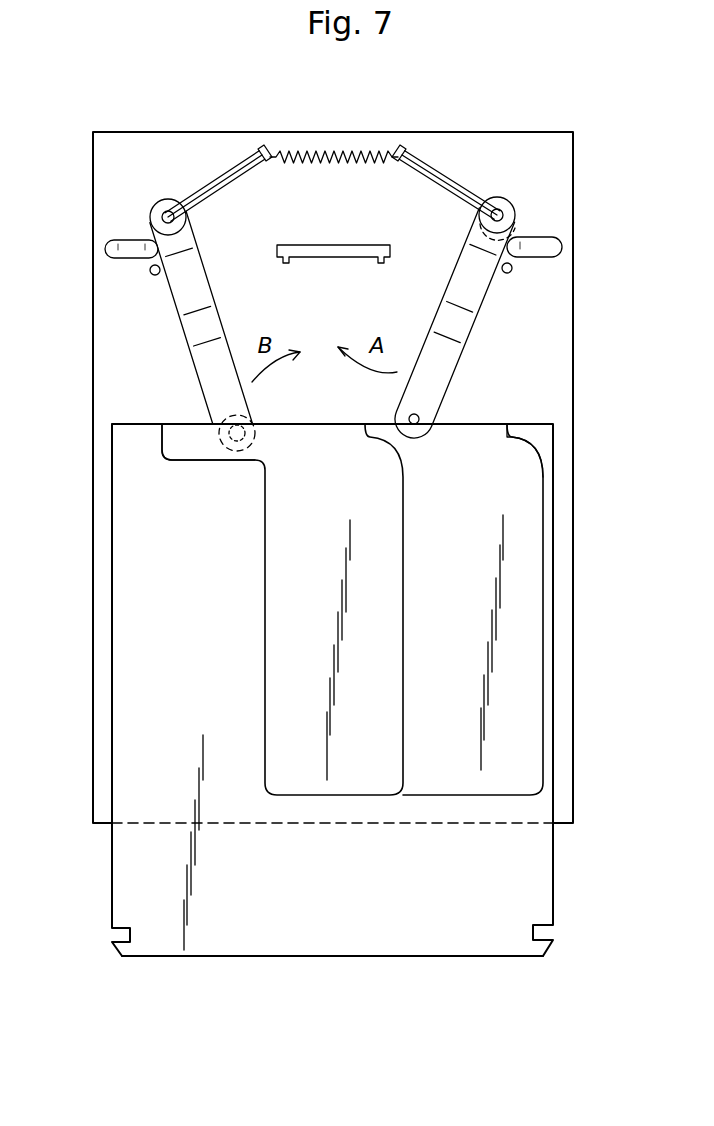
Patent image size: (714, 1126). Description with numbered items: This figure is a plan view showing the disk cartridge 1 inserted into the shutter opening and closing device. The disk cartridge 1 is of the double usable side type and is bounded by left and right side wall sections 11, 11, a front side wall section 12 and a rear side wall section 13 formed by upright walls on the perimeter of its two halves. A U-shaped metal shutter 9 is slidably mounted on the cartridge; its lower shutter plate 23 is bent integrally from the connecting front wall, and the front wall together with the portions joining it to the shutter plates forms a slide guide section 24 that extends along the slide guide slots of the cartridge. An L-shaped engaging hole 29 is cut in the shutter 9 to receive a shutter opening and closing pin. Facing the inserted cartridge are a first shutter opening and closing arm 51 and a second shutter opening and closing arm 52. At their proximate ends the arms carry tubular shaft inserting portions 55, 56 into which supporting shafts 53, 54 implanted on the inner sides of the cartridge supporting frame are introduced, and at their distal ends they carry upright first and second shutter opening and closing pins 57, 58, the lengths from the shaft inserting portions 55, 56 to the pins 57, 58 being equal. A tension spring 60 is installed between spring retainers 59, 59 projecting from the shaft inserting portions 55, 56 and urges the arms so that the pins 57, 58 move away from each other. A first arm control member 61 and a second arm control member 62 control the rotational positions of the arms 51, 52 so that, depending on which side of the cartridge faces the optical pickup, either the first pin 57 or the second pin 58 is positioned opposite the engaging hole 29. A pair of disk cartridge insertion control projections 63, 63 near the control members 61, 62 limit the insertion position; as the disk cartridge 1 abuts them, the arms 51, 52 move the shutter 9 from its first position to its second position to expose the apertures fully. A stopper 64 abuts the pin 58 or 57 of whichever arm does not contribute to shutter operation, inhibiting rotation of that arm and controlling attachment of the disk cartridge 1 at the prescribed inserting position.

The disk cartridge 1 is at (537, 542).
The shutter 9 is at (388, 621).
The side wall section 11 is at (112, 660).
The front side wall section 12 is at (483, 423).
The rear side wall section 13 is at (325, 956).
The lower shutter plate 23 is at (275, 680).
The slide guide section 24 is at (182, 445).
The engaging hole 29 is at (255, 425).
The first shutter opening and closing arm 51 is at (198, 282).
The second shutter opening and closing arm 52 is at (458, 302).
The supporting shaft 53 is at (162, 215).
The supporting shaft 54 is at (500, 211).
The shaft inserting portion 55 is at (168, 211).
The shaft inserting portion 56 is at (514, 213).
The first shutter opening and closing pin 57 is at (250, 417).
The second shutter opening and closing pin 58 is at (411, 417).
The spring retainer 59 is at (223, 172).
The tension spring 60 is at (320, 152).
The first arm control member 61 is at (105, 248).
The second arm control member 62 is at (562, 247).
The disk cartridge insertion control projection 63 is at (152, 272).
The stopper 64 is at (348, 245).